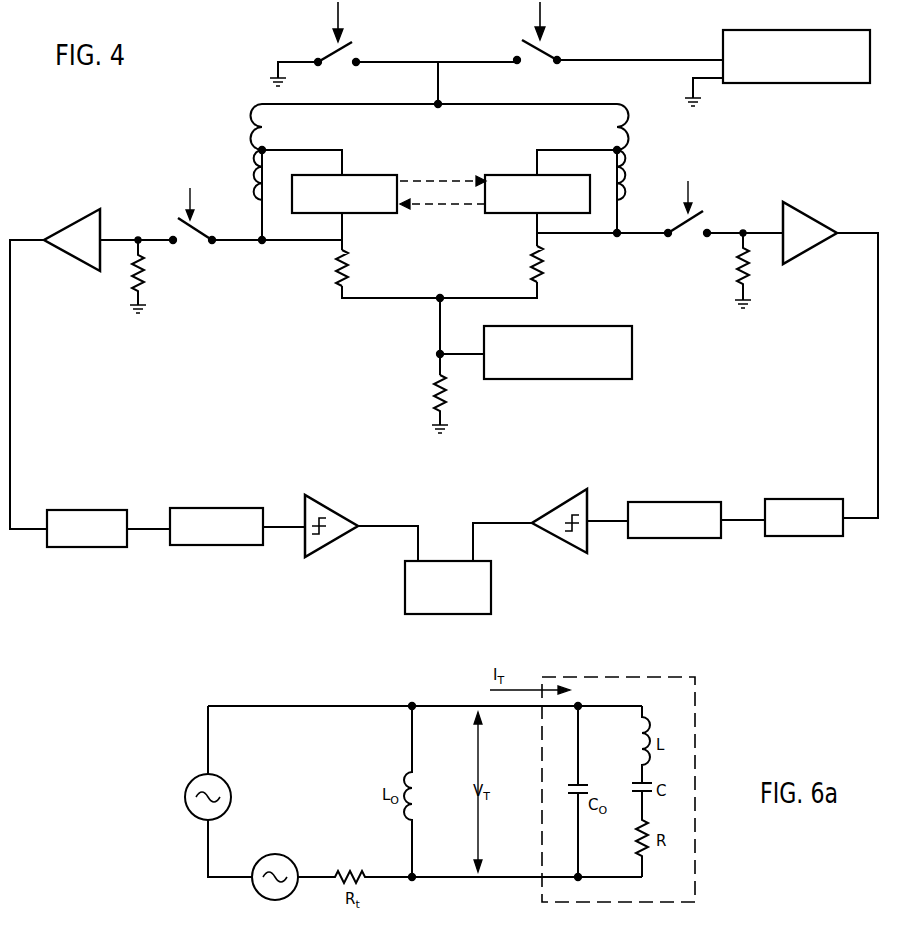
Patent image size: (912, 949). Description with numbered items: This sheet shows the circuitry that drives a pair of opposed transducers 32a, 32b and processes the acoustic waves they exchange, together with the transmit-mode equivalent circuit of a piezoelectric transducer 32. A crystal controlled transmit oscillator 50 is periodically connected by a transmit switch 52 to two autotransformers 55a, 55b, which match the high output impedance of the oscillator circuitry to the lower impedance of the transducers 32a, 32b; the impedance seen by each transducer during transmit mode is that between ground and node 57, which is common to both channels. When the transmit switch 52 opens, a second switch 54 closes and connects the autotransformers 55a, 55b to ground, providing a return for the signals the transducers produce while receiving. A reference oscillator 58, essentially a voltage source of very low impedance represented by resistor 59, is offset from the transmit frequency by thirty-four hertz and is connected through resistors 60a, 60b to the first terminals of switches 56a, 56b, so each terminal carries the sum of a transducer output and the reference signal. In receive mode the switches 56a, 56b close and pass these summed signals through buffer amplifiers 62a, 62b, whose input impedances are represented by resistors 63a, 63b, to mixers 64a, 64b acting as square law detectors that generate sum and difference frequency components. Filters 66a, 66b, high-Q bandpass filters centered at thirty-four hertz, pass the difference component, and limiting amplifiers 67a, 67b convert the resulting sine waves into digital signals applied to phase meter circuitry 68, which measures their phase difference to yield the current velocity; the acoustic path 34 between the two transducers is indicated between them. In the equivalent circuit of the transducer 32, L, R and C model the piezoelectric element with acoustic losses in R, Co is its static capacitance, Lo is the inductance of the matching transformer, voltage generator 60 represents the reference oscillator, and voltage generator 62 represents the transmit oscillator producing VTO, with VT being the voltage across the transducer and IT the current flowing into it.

In FIG. 4, the transmit oscillator 50 is at (790, 30).
In FIG. 4, the transmit switch 52 is at (548, 55).
In FIG. 4, the second switch 54 is at (330, 54).
In FIG. 4, the autotransformer 55a is at (620, 138).
In FIG. 4, the autotransformer 55b is at (258, 140).
In FIG. 4, the switch 56a is at (678, 240).
In FIG. 4, the switch 56b is at (205, 246).
In FIG. 4, the node 57 is at (439, 60).
In FIG. 4, the reference oscillator 58 is at (578, 326).
In FIG. 4, the resistor 59 is at (436, 388).
In FIG. 4, the resistor 60a is at (530, 262).
In FIG. 4, the resistor 60b is at (350, 262).
In FIG. 4, the buffer amplifier 62a is at (808, 212).
In FIG. 4, the buffer amplifier 62b is at (82, 216).
In FIG. 4, the resistor 63a is at (736, 270).
In FIG. 4, the resistor 63b is at (145, 275).
In FIG. 4, the mixer 64a is at (820, 499).
In FIG. 4, the mixer 64b is at (65, 510).
In FIG. 4, the filter 66a is at (695, 502).
In FIG. 4, the filter 66b is at (195, 508).
In FIG. 4, the limiting amplifier 67a is at (565, 502).
In FIG. 4, the limiting amplifier 67b is at (326, 506).
In FIG. 4, the phase meter circuitry 68 is at (492, 587).
In FIG. 4, the transducer 32a is at (514, 175).
In FIG. 4, the transducer 32b is at (368, 175).
In FIG. 4, the acoustic path 34 is at (442, 195).
In FIG. 6a, the transducer 32 is at (684, 700).
In FIG. 6a, the voltage generator 60 is at (288, 858).
In FIG. 6a, the voltage generator 62 is at (221, 778).